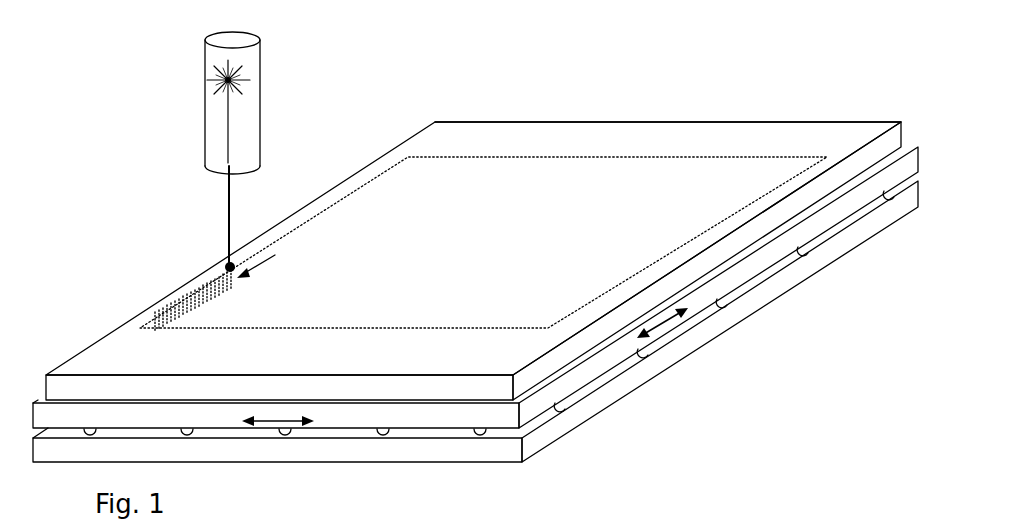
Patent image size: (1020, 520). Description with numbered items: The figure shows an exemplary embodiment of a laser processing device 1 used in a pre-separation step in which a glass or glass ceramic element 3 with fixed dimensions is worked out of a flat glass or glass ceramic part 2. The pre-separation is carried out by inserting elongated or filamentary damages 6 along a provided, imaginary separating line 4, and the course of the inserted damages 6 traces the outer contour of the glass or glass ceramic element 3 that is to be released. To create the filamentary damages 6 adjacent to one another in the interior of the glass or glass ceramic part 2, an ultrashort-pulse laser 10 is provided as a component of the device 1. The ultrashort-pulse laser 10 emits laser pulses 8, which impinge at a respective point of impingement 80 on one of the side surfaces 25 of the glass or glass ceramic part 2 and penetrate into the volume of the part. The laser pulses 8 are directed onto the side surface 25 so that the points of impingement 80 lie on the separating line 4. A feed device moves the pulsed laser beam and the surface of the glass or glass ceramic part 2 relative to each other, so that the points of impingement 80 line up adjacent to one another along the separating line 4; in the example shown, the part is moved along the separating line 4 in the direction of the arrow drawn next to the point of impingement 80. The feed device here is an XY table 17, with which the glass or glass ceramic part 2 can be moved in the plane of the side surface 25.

The laser processing device 1 is at (449, 95).
The flat glass or glass ceramic part 2 is at (92, 337).
The glass or glass ceramic element 3 is at (703, 190).
The separating line 4 is at (625, 157).
The side surface 25 is at (815, 135).
The filamentary damages 6 is at (173, 307).
The laser pulses 8 is at (229, 213).
The point of impingement 80 is at (222, 263).
The ultrashort-pulse laser 10 is at (202, 90).
The XY table 17 is at (676, 377).